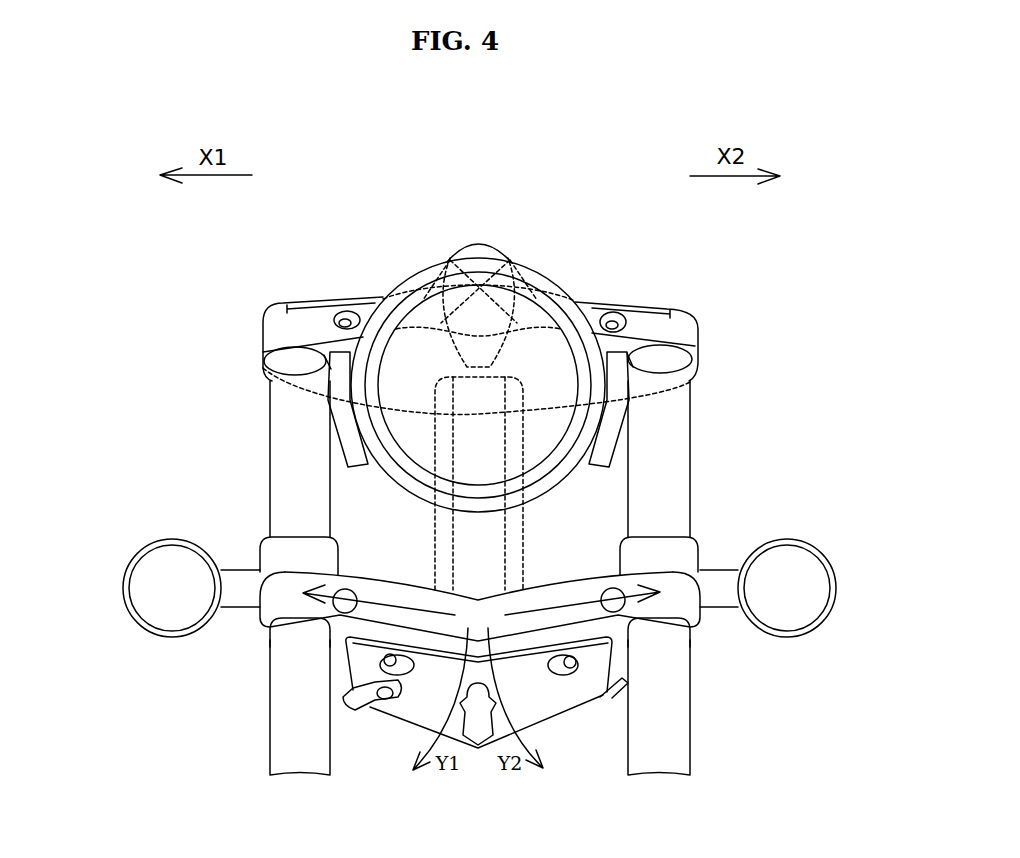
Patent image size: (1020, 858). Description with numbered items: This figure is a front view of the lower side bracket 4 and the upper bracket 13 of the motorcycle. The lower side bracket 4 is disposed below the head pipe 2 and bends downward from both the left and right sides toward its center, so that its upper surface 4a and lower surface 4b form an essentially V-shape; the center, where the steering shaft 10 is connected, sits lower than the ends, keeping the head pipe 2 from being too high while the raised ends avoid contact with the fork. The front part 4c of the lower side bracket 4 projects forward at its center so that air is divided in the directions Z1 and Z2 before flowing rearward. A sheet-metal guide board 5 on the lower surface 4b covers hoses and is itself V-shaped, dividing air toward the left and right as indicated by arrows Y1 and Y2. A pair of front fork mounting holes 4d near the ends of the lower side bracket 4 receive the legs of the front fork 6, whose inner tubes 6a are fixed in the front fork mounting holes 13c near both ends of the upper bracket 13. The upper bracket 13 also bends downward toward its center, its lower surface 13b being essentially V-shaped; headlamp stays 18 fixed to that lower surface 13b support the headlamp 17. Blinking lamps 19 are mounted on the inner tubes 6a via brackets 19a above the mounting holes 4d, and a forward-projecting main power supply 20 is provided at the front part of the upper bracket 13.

The head pipe 2 is at (443, 552).
The lower side bracket 4 is at (690, 608).
The upper surface 4a is at (597, 578).
The lower surface 4b is at (614, 693).
The front part 4c is at (520, 627).
The front fork mounting holes 4d is at (272, 632).
The guide board 5 is at (420, 715).
The front fork 6 is at (286, 741).
The inner tube 6a is at (285, 475).
The steering shaft 10 is at (505, 567).
The upper bracket 13 is at (672, 336).
The lower surface 13b is at (642, 346).
The front fork mounting holes 13c is at (263, 368).
The headlamp 17 is at (537, 358).
The headlamp stays 18 is at (345, 432).
The blinking lamps 19 is at (175, 588).
The brackets 19a is at (238, 580).
The main power supply 20 is at (478, 248).